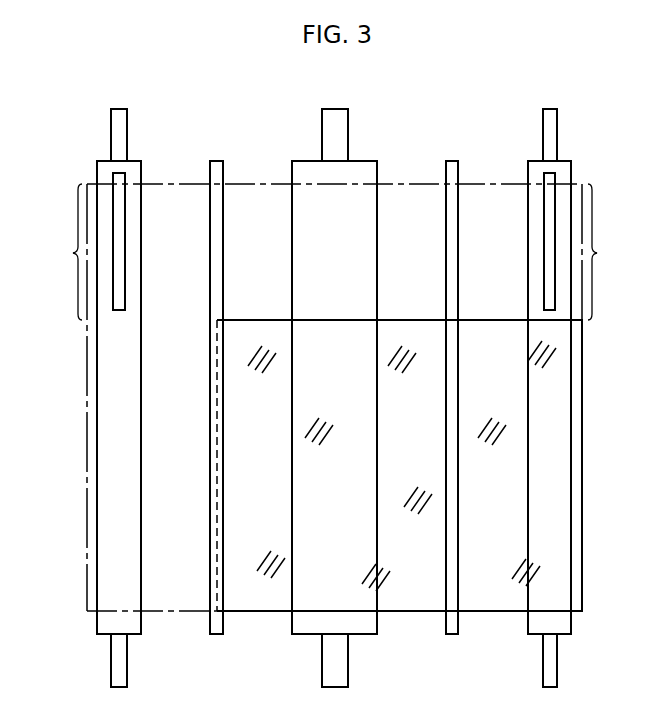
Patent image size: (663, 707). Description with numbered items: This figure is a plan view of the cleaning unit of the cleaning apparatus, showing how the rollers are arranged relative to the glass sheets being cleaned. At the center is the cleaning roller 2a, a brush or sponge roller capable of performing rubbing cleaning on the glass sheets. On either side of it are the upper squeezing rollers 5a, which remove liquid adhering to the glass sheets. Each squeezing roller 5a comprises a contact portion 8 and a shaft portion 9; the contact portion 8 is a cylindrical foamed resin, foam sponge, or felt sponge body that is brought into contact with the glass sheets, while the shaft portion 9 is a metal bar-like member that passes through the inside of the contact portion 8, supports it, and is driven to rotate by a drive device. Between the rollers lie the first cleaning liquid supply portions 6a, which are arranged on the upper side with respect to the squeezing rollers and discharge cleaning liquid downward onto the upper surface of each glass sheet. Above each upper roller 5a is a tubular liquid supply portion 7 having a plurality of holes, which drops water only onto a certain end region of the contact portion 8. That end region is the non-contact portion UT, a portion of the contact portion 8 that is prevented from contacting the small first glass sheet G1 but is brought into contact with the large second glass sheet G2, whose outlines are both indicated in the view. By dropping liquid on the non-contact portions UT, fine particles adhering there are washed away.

The cleaning roller 2a is at (297, 156).
The squeezing roller 5a is at (333, 398).
The first cleaning liquid supply portion 6a is at (215, 156).
The liquid supply portion 7 is at (125, 203).
The contact portion 8 is at (96, 545).
The shaft portion 9 is at (76, 624).
The first glass sheet G1 is at (491, 319).
The second glass sheet G2 is at (479, 183).
The non-contact portion UT is at (334, 252).